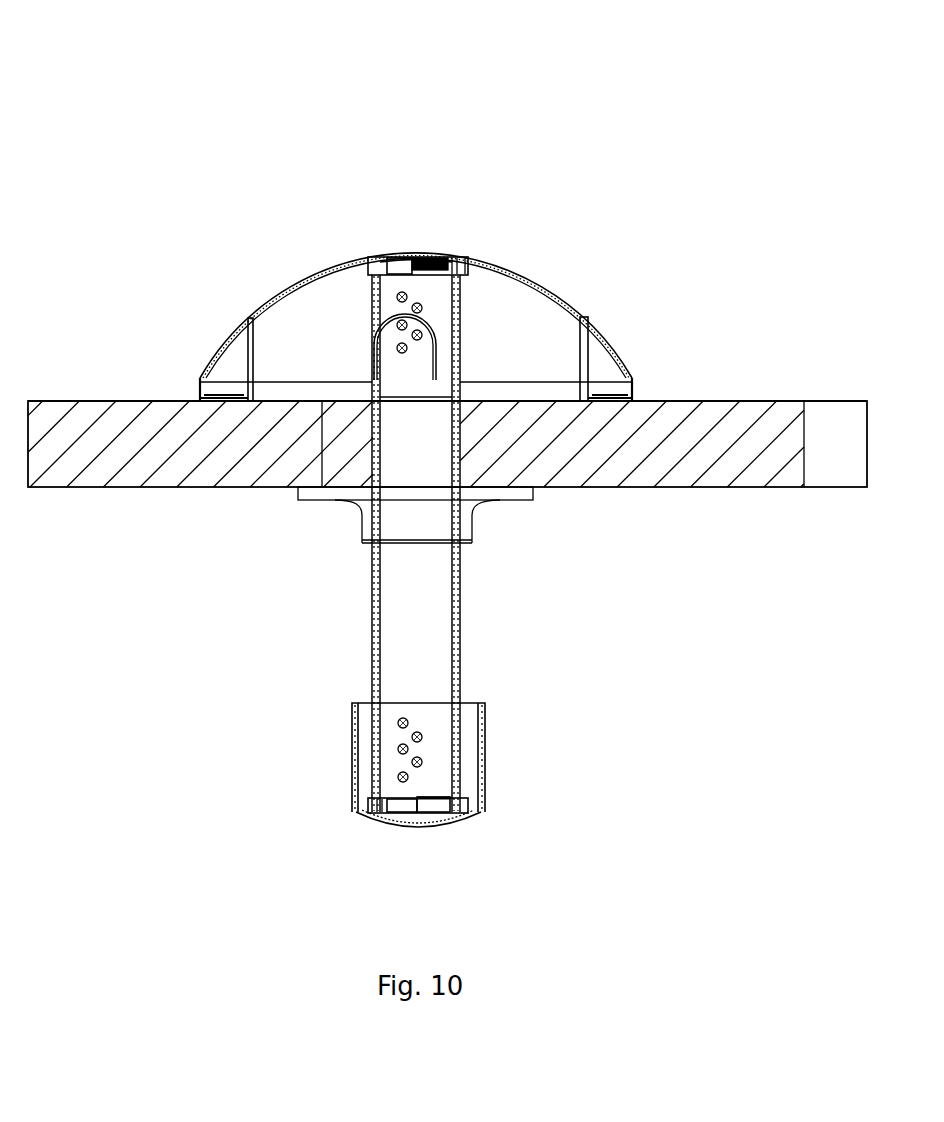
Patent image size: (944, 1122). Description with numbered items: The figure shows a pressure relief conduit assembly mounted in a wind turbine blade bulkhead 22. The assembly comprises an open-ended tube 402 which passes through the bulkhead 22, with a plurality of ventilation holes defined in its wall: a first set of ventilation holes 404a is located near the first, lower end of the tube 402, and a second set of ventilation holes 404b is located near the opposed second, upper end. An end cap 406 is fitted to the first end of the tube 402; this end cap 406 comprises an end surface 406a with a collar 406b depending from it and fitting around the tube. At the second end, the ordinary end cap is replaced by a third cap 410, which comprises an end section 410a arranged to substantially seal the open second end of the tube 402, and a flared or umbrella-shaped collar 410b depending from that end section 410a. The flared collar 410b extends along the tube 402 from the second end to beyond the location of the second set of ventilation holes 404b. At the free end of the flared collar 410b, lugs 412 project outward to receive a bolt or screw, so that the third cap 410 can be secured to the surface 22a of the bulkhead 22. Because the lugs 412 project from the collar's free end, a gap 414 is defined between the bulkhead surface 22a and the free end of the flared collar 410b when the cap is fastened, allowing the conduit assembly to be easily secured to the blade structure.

The blade bulkhead 22 is at (703, 455).
The bulkhead surface 22a is at (731, 400).
The open-ended tube 402 is at (372, 604).
The first set of ventilation holes 404a is at (390, 760).
The second set of ventilation holes 404b is at (433, 290).
The end cap 406 is at (410, 821).
The end surface 406a is at (428, 825).
The collar 406b is at (485, 780).
The third end cap 410 is at (394, 192).
The end section 410a is at (428, 247).
The flared collar 410b is at (308, 272).
The lug 412 is at (217, 393).
The gap 414 is at (300, 393).